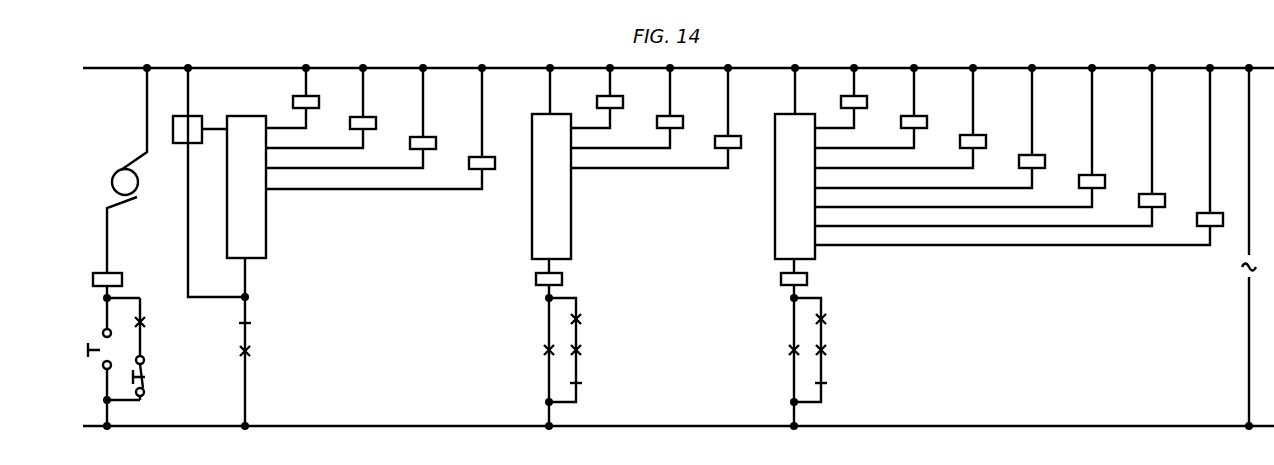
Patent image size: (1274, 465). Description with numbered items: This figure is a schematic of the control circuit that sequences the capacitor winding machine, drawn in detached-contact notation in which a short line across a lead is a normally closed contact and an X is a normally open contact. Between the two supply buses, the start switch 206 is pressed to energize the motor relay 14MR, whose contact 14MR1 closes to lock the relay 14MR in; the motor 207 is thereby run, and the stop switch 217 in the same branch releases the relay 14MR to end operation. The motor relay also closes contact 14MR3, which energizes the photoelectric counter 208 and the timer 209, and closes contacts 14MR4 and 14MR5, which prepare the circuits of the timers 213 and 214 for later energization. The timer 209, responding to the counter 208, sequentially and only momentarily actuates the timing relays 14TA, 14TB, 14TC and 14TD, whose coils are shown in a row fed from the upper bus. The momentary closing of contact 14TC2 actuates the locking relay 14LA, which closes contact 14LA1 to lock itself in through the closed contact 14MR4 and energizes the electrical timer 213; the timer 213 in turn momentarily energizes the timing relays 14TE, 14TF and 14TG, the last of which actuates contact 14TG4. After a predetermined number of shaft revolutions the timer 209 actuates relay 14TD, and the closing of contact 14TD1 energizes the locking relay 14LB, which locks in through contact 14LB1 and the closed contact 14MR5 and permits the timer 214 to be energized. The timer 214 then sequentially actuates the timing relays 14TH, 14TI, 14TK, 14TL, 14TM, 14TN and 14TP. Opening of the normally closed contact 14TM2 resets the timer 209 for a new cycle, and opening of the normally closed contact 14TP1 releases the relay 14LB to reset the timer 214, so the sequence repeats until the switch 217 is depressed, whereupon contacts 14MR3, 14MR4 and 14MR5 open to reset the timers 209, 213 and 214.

The start switch 206 is at (90, 336).
The motor 207 is at (138, 182).
The photoelectric counter 208 is at (193, 117).
The timer 209 is at (266, 228).
The electrical timer 213 is at (572, 228).
The timer 214 is at (775, 228).
The stop switch 217 is at (147, 390).
The motor relay 14MR is at (110, 273).
The motor relay contact 14MR1 is at (145, 322).
The motor relay contact 14MR3 is at (249, 353).
The motor relay contact 14MR4 is at (581, 353).
The motor relay contact 14MR5 is at (826, 353).
The timing relay contact 14TM2 is at (249, 323).
The timing relay 14TA is at (293, 97).
The timing relay 14TB is at (392, 109).
The timing relay 14TC is at (452, 130).
The timing relay 14TD is at (496, 165).
The timing relay 14TE is at (637, 92).
The timing relay 14TF is at (700, 108).
The timing relay 14TG is at (742, 143).
The timing relay 14TH is at (885, 92).
The timing relay 14TI is at (942, 110).
The timing relay 14TK is at (1000, 130).
The timing relay 14TL is at (1058, 150).
The timing relay 14TM is at (1120, 170).
The timing relay 14TN is at (1180, 189).
The timing relay 14TP is at (1221, 226).
The locking relay 14LA is at (536, 279).
The locking relay contact 14LA1 is at (580, 317).
The timing relay contact 14TC2 is at (546, 350).
The timing relay contact 14TG4 is at (582, 385).
The locking relay 14LB is at (781, 279).
The locking relay contact 14LB1 is at (825, 317).
The timing relay contact 14TD1 is at (791, 350).
The timing relay contact 14TP1 is at (827, 385).